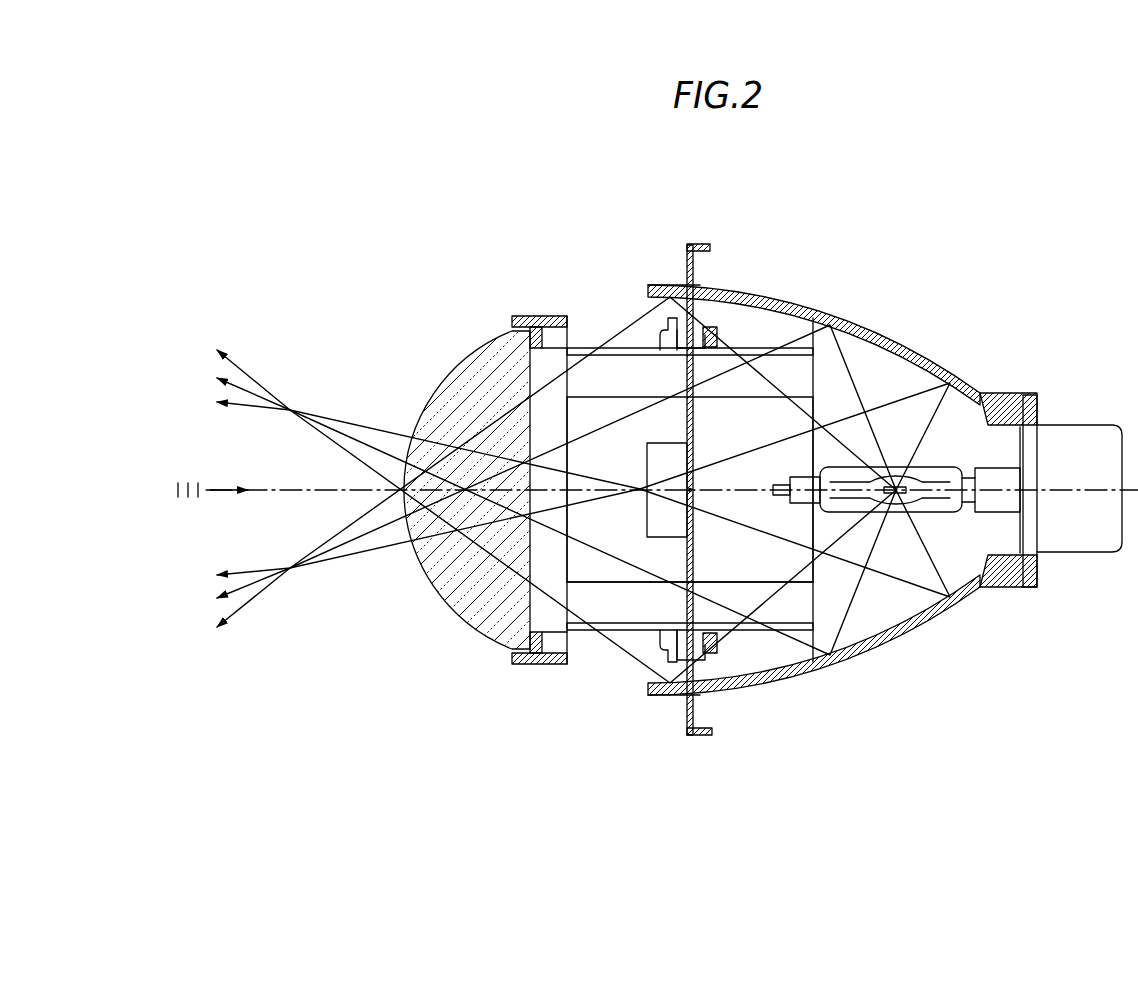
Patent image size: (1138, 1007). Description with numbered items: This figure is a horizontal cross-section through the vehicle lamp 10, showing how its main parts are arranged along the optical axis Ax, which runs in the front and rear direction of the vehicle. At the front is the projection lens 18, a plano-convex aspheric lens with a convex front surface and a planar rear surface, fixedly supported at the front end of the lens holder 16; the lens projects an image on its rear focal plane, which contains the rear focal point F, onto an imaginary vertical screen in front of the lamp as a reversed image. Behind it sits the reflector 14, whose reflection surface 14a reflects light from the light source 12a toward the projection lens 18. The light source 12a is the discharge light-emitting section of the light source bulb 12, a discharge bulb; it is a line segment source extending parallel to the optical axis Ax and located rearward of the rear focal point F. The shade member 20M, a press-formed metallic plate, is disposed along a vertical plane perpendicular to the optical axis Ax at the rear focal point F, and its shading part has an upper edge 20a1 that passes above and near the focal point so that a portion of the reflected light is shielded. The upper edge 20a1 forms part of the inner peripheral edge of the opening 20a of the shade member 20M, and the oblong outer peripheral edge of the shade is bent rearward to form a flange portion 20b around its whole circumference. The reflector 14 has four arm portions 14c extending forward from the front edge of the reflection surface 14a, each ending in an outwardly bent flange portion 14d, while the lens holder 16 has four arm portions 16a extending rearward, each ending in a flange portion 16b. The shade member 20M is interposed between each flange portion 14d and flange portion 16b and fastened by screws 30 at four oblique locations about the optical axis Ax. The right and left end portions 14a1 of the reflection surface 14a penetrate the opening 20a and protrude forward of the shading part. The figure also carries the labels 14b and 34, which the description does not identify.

The vehicle lamp 10 is at (980, 243).
The light source bulb 12 is at (899, 454).
The light source 12a is at (912, 505).
The reflector 14 is at (820, 504).
The reflection surface 14a is at (947, 375).
The end portions of the reflection surface 14a1 is at (667, 298).
The bulb insertion hole portion 14b is at (1020, 432).
The arm portion 14c is at (763, 673).
The flange portion 14d is at (747, 632).
The lens holder 16 is at (645, 465).
The arm portion 16a is at (593, 632).
The flange portion 16b is at (672, 657).
The projection lens 18 is at (427, 407).
The opening 20a is at (693, 427).
The upper edge of the shading part 20a1 is at (695, 527).
The flange portion 20b is at (697, 738).
The shade member 20M is at (653, 507).
The screw 30 is at (660, 640).
The block member 34 is at (653, 472).
The rear focal point F is at (693, 493).
The optical axis Ax is at (312, 492).